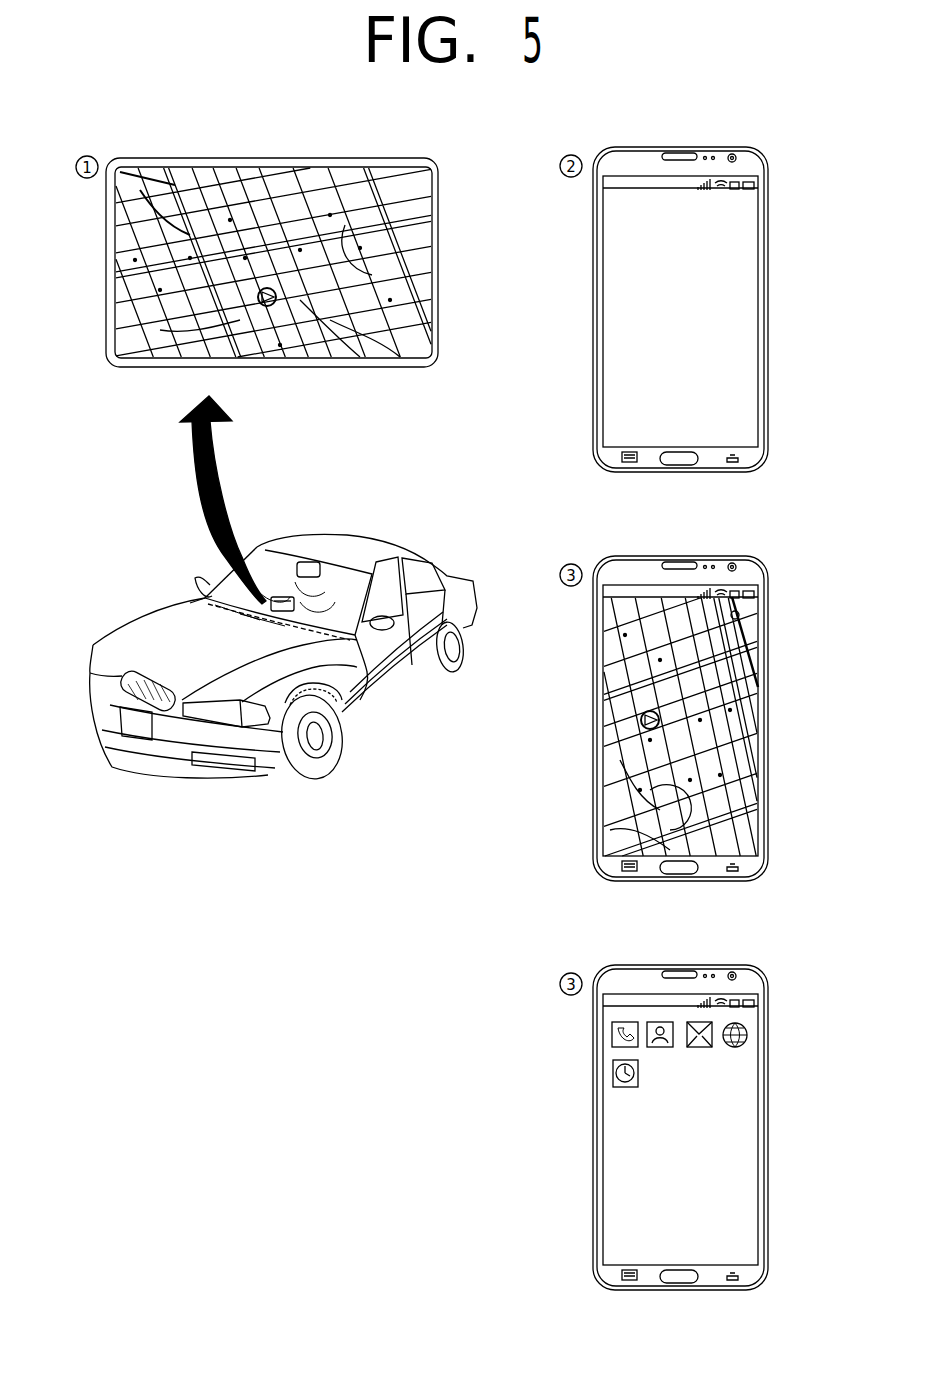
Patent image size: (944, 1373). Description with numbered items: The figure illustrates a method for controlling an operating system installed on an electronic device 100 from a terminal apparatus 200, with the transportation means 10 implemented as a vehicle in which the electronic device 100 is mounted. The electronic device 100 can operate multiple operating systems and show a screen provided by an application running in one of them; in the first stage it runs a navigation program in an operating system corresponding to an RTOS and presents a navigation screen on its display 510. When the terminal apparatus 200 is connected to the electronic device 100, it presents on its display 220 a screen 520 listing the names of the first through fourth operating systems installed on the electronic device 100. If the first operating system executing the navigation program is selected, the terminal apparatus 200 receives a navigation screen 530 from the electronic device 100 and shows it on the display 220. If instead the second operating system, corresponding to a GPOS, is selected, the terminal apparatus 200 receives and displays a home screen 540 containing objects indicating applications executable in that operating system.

The transportation means 10 is at (373, 543).
The electronic device 100 is at (281, 596).
The terminal apparatus 200 is at (678, 146).
The display 220 is at (758, 216).
The display 510 is at (362, 157).
The screen 520 is at (748, 377).
The navigation screen 530 is at (748, 783).
The home screen with application icons 540 is at (748, 1194).